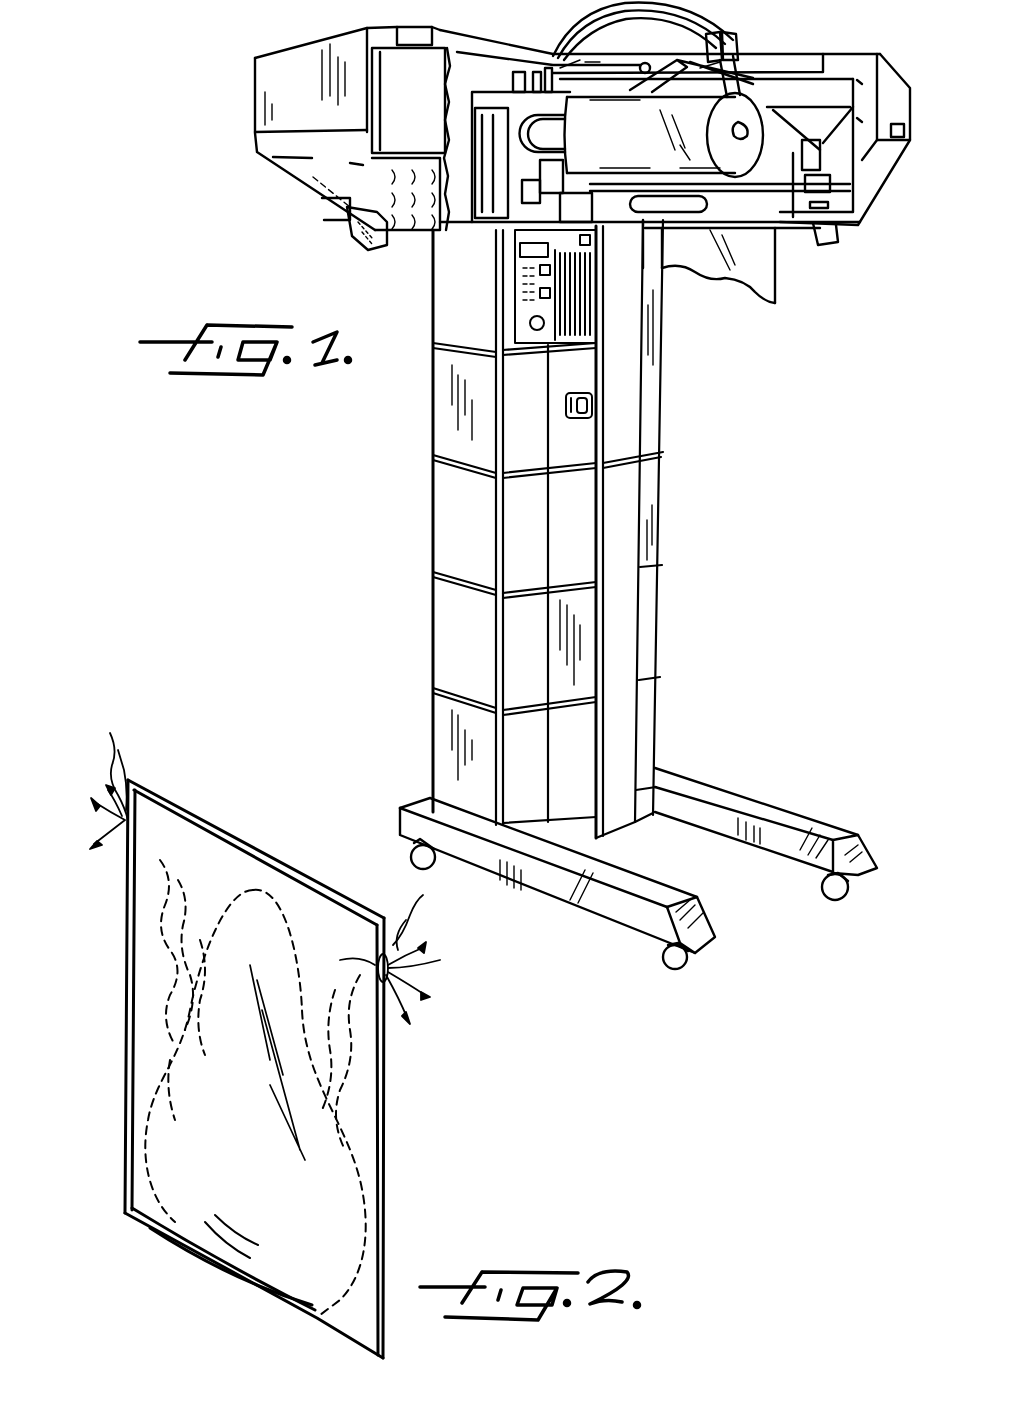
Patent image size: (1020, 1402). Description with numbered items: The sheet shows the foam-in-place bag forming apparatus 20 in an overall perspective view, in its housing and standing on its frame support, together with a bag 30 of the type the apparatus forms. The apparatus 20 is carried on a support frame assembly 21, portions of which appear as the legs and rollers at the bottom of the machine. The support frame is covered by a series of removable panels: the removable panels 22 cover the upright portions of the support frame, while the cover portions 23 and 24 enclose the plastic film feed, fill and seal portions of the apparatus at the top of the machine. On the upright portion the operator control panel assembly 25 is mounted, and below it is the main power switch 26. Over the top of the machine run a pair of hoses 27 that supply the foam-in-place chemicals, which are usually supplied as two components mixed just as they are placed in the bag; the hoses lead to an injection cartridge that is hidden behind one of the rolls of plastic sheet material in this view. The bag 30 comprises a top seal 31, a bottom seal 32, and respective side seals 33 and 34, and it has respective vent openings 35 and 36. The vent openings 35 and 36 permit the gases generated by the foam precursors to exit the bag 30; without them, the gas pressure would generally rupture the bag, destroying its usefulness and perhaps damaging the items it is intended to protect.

In FIG. 1, the apparatus 20 is at (328, 482).
In FIG. 1, the support frame assembly 21 is at (790, 822).
In FIG. 1, the removable panels 22 is at (445, 547).
In FIG. 1, the cover portion 23 is at (305, 52).
In FIG. 1, the cover portion 24 is at (905, 75).
In FIG. 1, the operator control panel assembly 25 is at (515, 300).
In FIG. 1, the main power switch 26 is at (628, 395).
In FIG. 1, the hoses 27 is at (578, 22).
In FIG. 2, the bag 30 is at (115, 1073).
In FIG. 2, the top seal 31 is at (278, 862).
In FIG. 2, the bottom seal 32 is at (317, 1320).
In FIG. 2, the side seal 33 is at (130, 918).
In FIG. 2, the side seal 34 is at (386, 1060).
In FIG. 2, the vent opening 35 is at (100, 821).
In FIG. 2, the vent opening 36 is at (440, 960).